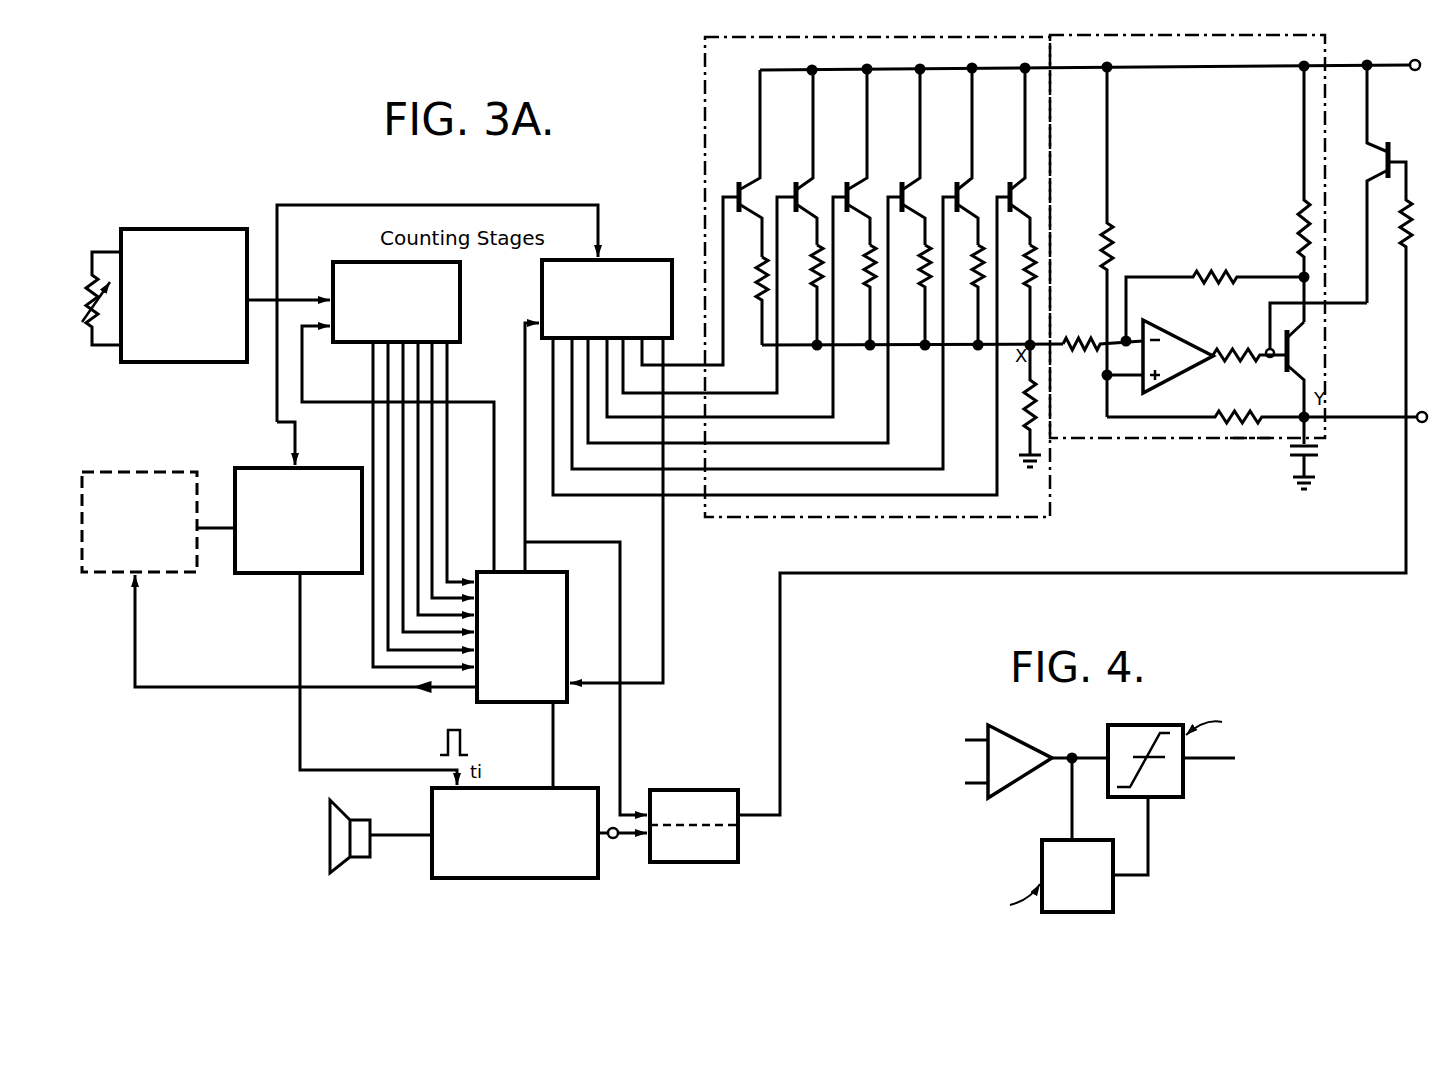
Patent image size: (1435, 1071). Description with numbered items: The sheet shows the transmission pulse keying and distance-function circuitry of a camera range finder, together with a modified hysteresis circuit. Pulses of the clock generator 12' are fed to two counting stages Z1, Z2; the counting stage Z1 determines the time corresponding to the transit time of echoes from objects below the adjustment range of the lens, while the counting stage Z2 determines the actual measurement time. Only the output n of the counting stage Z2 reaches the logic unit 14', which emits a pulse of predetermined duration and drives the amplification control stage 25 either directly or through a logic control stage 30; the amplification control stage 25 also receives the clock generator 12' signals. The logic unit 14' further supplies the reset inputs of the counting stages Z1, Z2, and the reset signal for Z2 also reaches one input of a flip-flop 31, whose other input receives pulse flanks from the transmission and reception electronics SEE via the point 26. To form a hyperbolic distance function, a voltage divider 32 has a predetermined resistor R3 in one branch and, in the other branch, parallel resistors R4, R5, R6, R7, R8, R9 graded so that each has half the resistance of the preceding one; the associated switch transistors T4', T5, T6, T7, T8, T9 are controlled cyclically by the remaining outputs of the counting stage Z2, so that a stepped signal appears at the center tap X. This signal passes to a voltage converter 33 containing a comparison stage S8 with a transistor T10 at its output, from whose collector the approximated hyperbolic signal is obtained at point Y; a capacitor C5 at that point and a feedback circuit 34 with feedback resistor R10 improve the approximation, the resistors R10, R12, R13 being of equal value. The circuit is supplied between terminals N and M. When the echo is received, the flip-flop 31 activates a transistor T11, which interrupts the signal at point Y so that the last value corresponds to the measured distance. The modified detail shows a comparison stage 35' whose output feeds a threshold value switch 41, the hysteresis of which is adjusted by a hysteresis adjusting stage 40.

In FIG. 3A, the clock generator 12' is at (164, 295).
In FIG. 3A, the counting stage Z1 is at (363, 307).
In FIG. 3A, the counting stage Z2 is at (572, 303).
In FIG. 3A, the logic control stage 30 is at (137, 470).
In FIG. 3A, the amplification control stage 25 is at (318, 466).
In FIG. 3A, the logic unit 14' is at (522, 637).
In FIG. 3A, the transmission and reception electronics SEE is at (497, 872).
In FIG. 3A, the point 26 is at (614, 840).
In FIG. 3A, the flip-flop 31 is at (692, 788).
In FIG. 3A, the voltage divider 32 is at (838, 522).
In FIG. 3A, the voltage converter 33 is at (1193, 440).
In FIG. 3A, the feedback circuit 34 is at (1250, 442).
In FIG. 3A, the switch transistor T4' is at (739, 163).
In FIG. 3A, the switch transistor T5 is at (796, 157).
In FIG. 3A, the switch transistor T6 is at (850, 157).
In FIG. 3A, the switch transistor T7 is at (905, 157).
In FIG. 3A, the switch transistor T8 is at (959, 156).
In FIG. 3A, the switch transistor T9 is at (1012, 156).
In FIG. 3A, the predetermined resistor R3 is at (1022, 406).
In FIG. 3A, the parallel resistor R4 is at (747, 301).
In FIG. 3A, the parallel resistor R5 is at (802, 286).
In FIG. 3A, the parallel resistor R6 is at (856, 286).
In FIG. 3A, the parallel resistor R7 is at (911, 284).
In FIG. 3A, the parallel resistor R8 is at (965, 284).
In FIG. 3A, the parallel resistor R9 is at (1018, 284).
In FIG. 3A, the feedback resistor R10 is at (1262, 403).
In FIG. 3A, the resistor R12 is at (1134, 242).
In FIG. 3A, the resistor R13 is at (1215, 292).
In FIG. 3A, the comparison stage S8 is at (1178, 347).
In FIG. 3A, the transistor T10 is at (1307, 369).
In FIG. 3A, the transistor T11 is at (1373, 184).
In FIG. 3A, the capacitor C5 is at (1325, 453).
In FIG. 3A, the supply terminal N is at (1413, 80).
In FIG. 3A, the output terminal M is at (1421, 432).
In FIG. 4, the comparison stage 35' is at (1008, 779).
In FIG. 4, the threshold value switch 41 is at (1186, 778).
In FIG. 4, the hysteresis adjusting stage 40 is at (1064, 888).